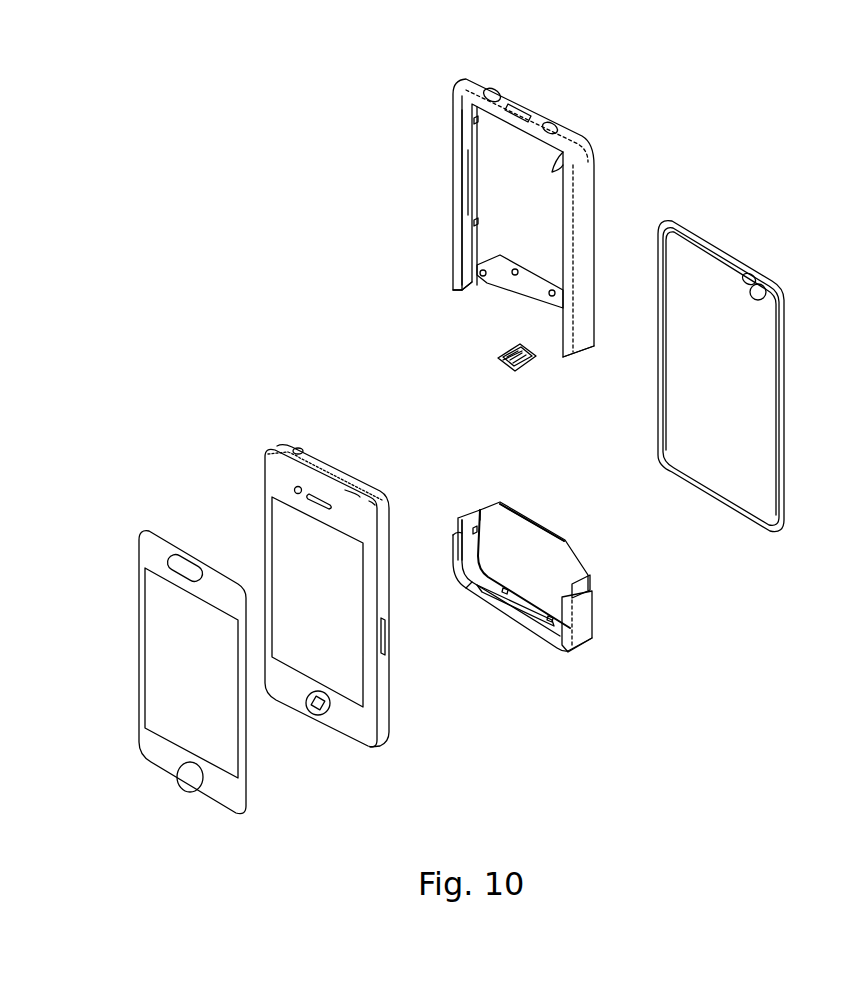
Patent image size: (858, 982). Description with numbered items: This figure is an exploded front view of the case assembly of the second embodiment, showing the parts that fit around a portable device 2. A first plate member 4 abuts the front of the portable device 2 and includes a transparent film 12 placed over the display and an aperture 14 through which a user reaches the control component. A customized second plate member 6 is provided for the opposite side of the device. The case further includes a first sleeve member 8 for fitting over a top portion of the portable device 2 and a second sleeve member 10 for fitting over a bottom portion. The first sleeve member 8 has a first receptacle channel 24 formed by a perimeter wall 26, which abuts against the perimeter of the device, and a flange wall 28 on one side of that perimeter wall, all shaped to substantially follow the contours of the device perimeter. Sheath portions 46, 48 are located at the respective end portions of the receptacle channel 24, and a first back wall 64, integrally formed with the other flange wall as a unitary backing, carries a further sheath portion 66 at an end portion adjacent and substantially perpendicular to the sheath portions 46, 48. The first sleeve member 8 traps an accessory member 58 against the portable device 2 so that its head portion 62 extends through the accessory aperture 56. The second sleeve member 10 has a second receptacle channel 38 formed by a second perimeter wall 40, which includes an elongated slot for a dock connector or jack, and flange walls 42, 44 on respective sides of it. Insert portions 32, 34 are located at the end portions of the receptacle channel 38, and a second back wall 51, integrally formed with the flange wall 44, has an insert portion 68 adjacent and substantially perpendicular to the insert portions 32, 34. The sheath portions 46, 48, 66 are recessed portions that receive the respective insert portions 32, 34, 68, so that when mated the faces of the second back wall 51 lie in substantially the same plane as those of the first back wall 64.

The portable device 2 is at (383, 686).
The first plate member 4 is at (156, 672).
The second plate member 6 is at (789, 307).
The first sleeve member 8 is at (596, 128).
The second sleeve member 10 is at (527, 570).
The transparent film 12 is at (170, 662).
The aperture 14 is at (178, 782).
The first receptacle channel 24 is at (466, 216).
The perimeter wall 26 is at (580, 258).
The flange wall 28 is at (462, 124).
The insert portion 32 is at (586, 584).
The insert portion 34 is at (467, 527).
The second receptacle channel 38 is at (456, 591).
The second perimeter wall 40 is at (585, 616).
The flange wall 42 is at (454, 572).
The flange wall 44 is at (481, 509).
The sheath portion 46 is at (470, 288).
The sheath portion 48 is at (566, 356).
The second back wall 51 is at (523, 556).
The accessory aperture 56 is at (525, 112).
The accessory member 58 is at (501, 365).
The head portion 62 is at (521, 350).
The first back wall 64 is at (538, 214).
The sheath portion 66 is at (533, 292).
The insert portion 68 is at (508, 514).